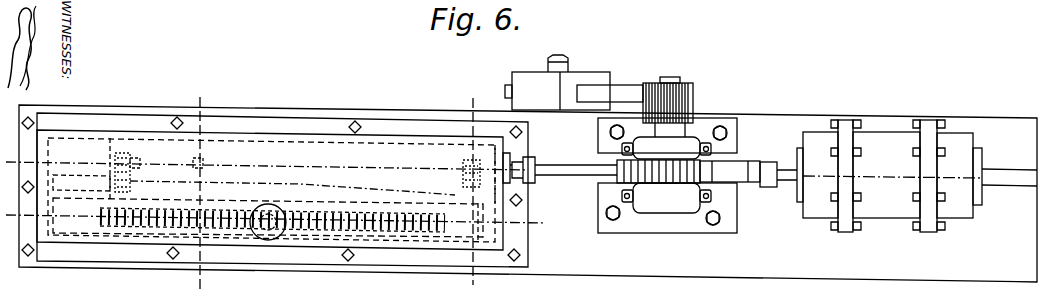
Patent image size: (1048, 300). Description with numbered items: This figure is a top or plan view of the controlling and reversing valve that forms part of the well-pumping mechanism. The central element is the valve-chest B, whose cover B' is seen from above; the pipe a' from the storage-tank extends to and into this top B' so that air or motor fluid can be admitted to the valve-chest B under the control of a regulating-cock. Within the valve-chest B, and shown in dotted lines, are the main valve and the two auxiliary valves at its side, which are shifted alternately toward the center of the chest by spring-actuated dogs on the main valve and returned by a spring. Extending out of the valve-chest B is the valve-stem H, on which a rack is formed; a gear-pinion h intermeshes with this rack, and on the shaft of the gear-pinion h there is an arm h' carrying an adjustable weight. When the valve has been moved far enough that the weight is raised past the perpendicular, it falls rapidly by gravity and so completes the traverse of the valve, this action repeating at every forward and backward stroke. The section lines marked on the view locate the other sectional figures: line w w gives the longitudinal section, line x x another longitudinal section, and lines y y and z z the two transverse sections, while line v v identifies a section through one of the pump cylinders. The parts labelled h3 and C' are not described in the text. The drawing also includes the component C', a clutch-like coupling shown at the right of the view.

The valve-chest B is at (282, 171).
The top or cover of the valve-chest B' is at (274, 190).
The pipe a' is at (272, 252).
The section line y y is at (197, 192).
The section line z z is at (470, 190).
The section line v v is at (264, 160).
The section line x x is at (278, 217).
The valve-stem H is at (568, 160).
The gear-pinion h is at (667, 175).
The arm h' is at (707, 159).
The worm h3 is at (631, 87).
The clutch C' is at (889, 176).
The section line w w is at (987, 140).